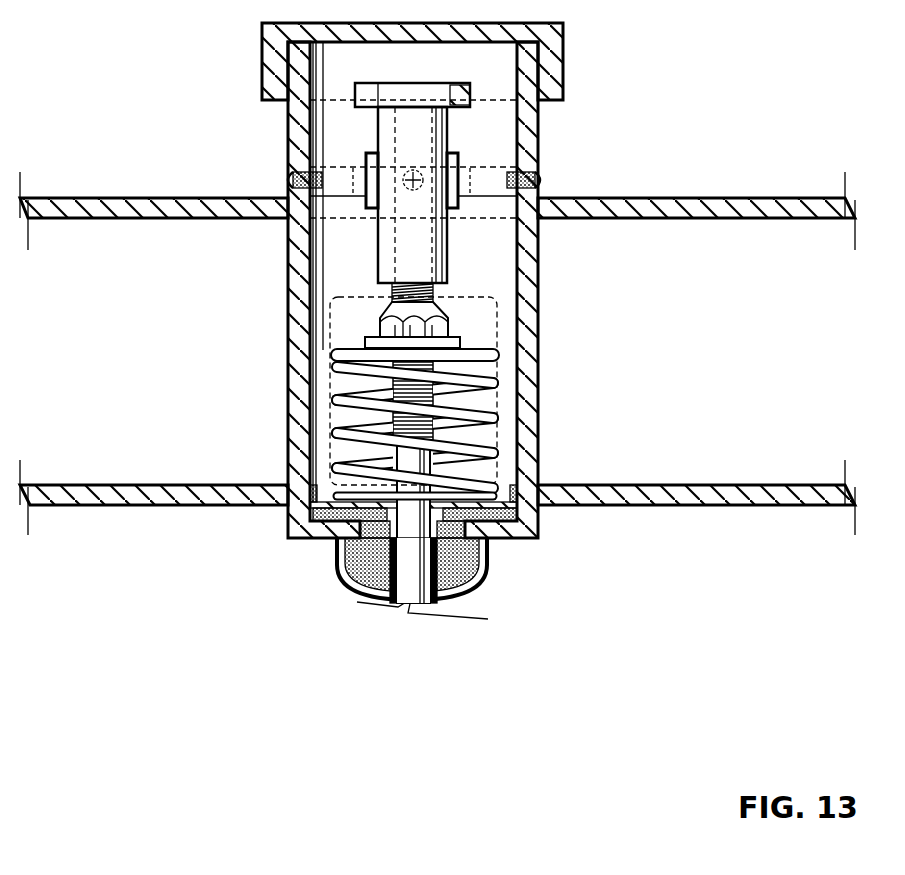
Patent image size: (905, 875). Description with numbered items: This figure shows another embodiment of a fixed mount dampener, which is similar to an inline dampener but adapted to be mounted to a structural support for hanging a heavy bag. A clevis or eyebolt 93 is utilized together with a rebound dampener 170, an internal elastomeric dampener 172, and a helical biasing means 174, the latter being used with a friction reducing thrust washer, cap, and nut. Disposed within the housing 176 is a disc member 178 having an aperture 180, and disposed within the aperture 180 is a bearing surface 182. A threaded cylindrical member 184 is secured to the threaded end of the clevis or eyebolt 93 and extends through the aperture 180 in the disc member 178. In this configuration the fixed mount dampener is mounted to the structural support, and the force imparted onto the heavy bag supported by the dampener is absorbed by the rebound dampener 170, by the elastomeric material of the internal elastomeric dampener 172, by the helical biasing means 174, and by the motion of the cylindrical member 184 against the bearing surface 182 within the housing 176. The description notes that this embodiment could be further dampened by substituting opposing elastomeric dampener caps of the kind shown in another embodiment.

The clevis or eyebolt 93 is at (413, 588).
The rebound dampener 170 is at (490, 558).
The internal elastomeric dampener 172 is at (519, 494).
The helical biasing means 174 is at (500, 380).
The housing 176 is at (538, 257).
The disc member 178 is at (490, 176).
The aperture 180 is at (380, 173).
The bearing surface 182 is at (457, 157).
The threaded cylindrical member 184 is at (392, 125).